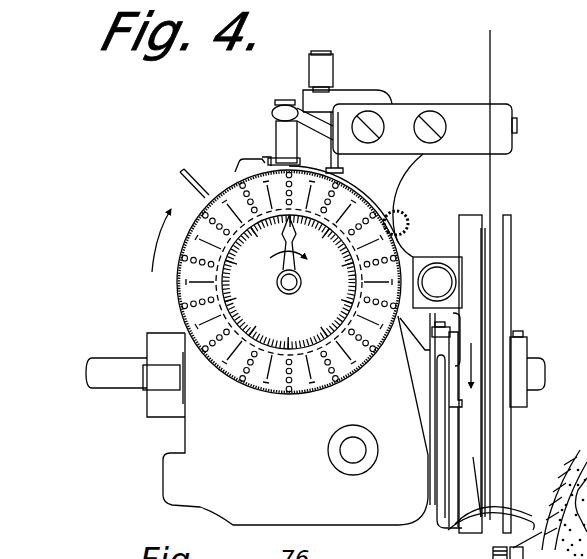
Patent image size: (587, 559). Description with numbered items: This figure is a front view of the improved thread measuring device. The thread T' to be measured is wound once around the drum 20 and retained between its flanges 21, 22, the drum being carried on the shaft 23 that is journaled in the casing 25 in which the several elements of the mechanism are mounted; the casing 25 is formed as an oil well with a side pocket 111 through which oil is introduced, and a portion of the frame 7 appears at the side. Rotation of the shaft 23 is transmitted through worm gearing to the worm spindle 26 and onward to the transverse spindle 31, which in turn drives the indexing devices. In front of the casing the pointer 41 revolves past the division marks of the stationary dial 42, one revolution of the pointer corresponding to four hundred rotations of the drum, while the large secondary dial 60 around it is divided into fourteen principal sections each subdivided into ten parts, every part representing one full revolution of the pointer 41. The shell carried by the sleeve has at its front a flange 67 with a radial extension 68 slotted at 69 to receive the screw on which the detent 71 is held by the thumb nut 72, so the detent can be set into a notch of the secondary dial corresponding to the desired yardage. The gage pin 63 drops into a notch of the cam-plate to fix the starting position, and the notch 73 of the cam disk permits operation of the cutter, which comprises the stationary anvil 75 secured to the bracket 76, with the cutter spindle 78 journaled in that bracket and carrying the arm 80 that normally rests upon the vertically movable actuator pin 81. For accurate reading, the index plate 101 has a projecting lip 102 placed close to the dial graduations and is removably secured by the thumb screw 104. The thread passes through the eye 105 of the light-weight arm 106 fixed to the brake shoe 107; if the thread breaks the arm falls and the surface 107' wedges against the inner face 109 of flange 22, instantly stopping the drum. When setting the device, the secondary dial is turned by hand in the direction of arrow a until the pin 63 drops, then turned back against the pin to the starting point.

The frame 7 is at (522, 127).
The reference line T' is at (520, 275).
The drum 20 is at (511, 303).
The flange 21 is at (511, 283).
The flange 22 is at (473, 332).
The shaft 23 is at (90, 375).
The casing 25 is at (186, 424).
The worm spindle 26 is at (352, 456).
The transverse spindle 31 is at (161, 378).
The pointer 41 is at (343, 201).
The stationary dial 42 is at (350, 392).
The secondary dial 60 is at (277, 390).
The pin 63 is at (283, 98).
The flange 67 is at (318, 402).
The radial extension 68 is at (421, 251).
The slot 69 is at (433, 258).
The detent 71 is at (462, 262).
The thumb nut 72 is at (447, 283).
The notch 73 is at (390, 372).
The stationary plate or anvil 75 is at (422, 129).
The bracket 76 is at (402, 171).
The cutter spindle 78 is at (446, 547).
The arm 80 is at (322, 118).
The actuator or pin 81 is at (294, 146).
The plate 101 is at (234, 158).
The projecting lip 102 is at (264, 156).
The thumb screw 104 is at (182, 178).
The eye or loop 105 is at (480, 530).
The light-weight arm 106 is at (439, 487).
The brake shoe 107 is at (429, 420).
The surface of the brake shoe 107' is at (540, 468).
The inner face 109 is at (584, 462).
The side pocket 111 is at (164, 479).
The arrow a is at (148, 264).